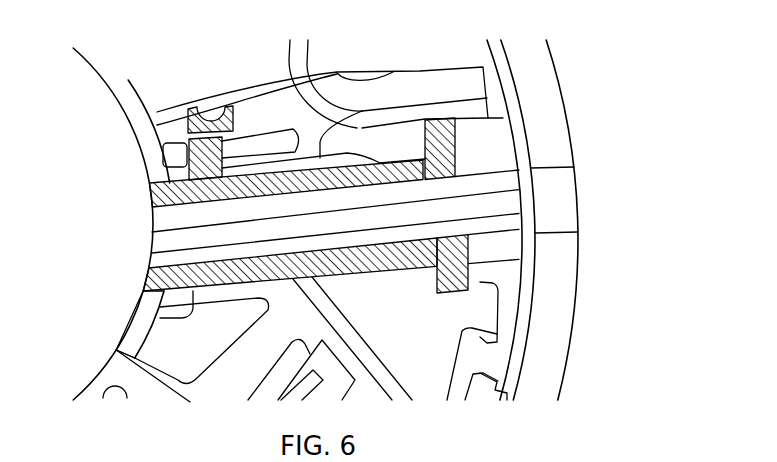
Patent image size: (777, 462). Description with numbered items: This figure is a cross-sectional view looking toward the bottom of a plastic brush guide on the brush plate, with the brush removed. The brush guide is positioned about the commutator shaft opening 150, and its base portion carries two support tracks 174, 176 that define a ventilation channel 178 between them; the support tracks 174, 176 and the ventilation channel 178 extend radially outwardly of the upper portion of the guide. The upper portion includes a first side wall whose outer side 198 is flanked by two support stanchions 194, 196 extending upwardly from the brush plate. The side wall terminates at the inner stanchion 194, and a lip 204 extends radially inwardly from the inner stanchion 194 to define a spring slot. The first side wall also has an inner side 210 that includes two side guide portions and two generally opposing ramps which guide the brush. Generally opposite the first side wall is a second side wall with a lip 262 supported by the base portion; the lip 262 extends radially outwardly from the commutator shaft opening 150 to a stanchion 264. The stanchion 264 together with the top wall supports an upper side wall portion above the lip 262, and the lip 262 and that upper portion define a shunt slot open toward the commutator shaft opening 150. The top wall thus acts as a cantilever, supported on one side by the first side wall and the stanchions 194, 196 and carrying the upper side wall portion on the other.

The commutator shaft opening 150 is at (126, 119).
The support track 174 is at (152, 230).
The support track 176 is at (149, 266).
The ventilation channel 178 is at (521, 205).
The inner support stanchion 194 is at (167, 164).
The support stanchion 196 is at (450, 133).
The outer side of the side wall 198 is at (362, 128).
The lip 204 is at (150, 194).
The inner side of the side wall 210 is at (300, 198).
The lip 262 is at (176, 318).
The stanchion 264 is at (478, 263).